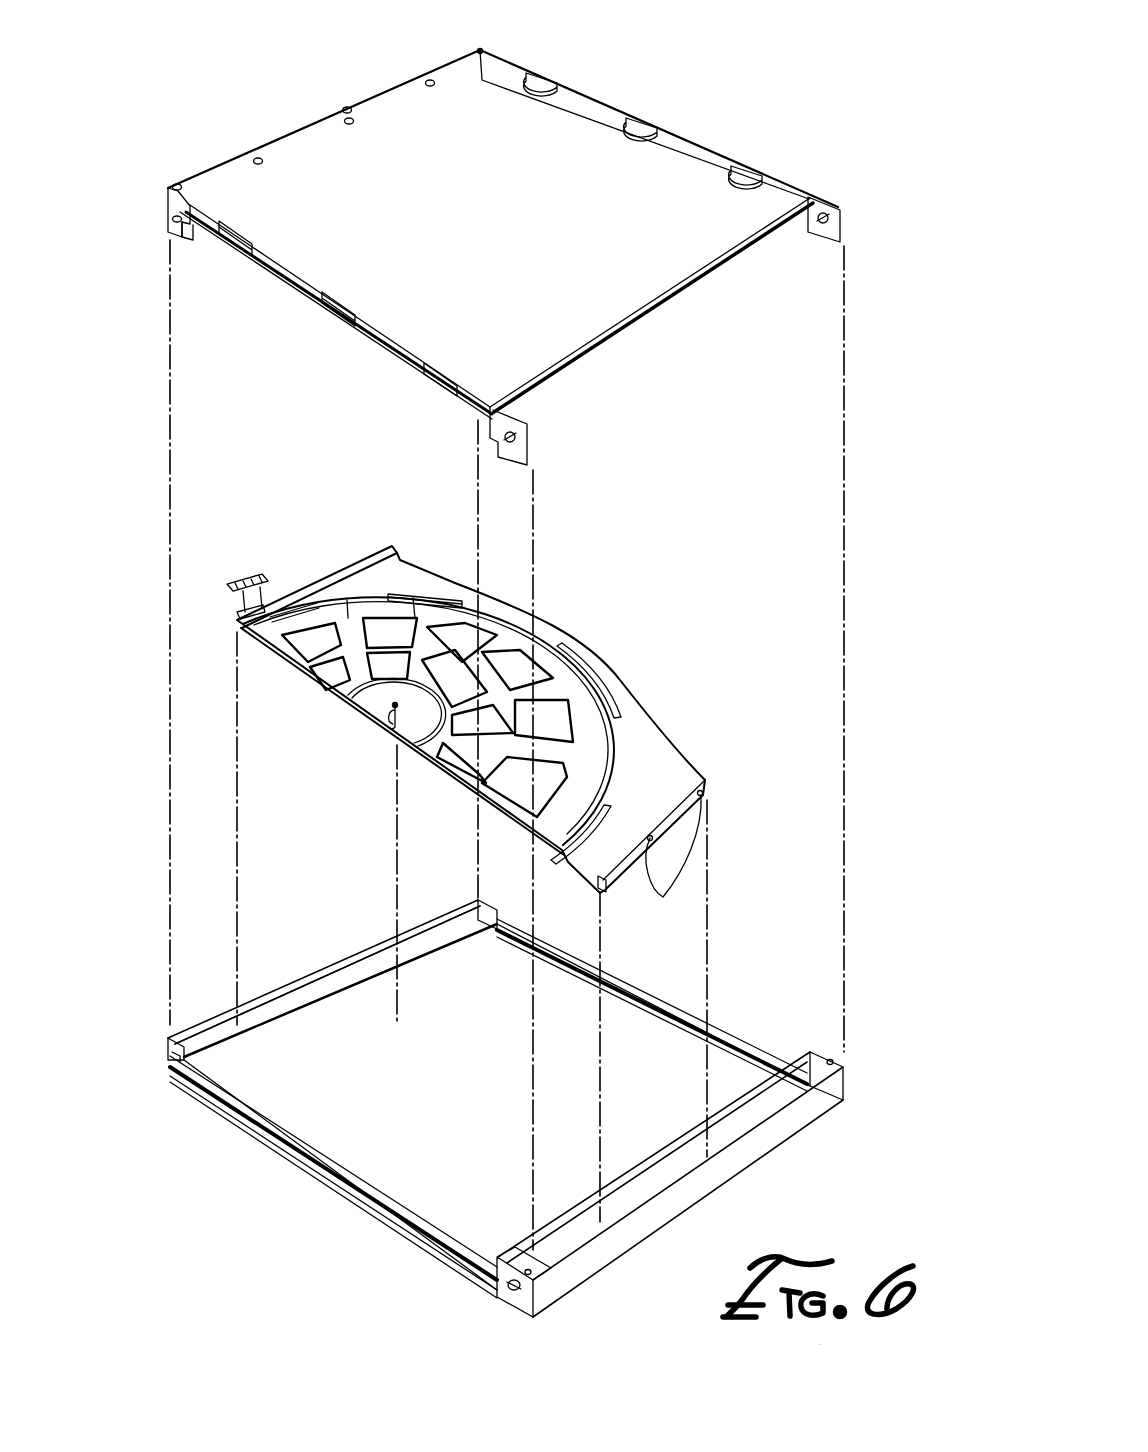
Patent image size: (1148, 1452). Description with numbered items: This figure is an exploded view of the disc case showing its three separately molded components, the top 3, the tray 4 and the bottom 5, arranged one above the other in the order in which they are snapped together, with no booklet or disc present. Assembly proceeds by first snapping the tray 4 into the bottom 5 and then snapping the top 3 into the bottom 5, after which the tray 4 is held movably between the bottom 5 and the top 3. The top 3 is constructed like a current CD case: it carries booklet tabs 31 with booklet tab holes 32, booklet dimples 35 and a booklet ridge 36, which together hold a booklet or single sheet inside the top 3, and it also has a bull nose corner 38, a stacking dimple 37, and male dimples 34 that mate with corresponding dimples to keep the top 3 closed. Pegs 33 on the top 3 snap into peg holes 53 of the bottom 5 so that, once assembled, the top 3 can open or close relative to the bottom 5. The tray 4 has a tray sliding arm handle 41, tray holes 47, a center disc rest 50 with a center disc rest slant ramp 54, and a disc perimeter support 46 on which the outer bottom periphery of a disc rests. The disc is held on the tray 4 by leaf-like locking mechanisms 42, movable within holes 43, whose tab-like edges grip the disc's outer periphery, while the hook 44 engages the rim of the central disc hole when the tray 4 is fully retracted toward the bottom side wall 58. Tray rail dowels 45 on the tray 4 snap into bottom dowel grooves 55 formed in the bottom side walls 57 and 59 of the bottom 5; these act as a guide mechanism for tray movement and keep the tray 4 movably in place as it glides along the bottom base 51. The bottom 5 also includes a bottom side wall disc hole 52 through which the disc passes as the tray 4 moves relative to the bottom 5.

The top 3 is at (368, 92).
The booklet tab 31 is at (237, 237).
The booklet tab hole 32 is at (226, 246).
The peg 33 is at (505, 440).
The male dimple 34 is at (173, 234).
The booklet dimple 35 is at (430, 82).
The booklet ridge 36 is at (645, 310).
The stacking dimple 37 is at (478, 48).
The bull nose corner 38 is at (168, 198).
The tray 4 is at (596, 650).
The tray sliding arm handle 41 is at (248, 582).
The locking mechanism 42 is at (395, 592).
The hole 43 is at (563, 845).
The hook 44 is at (368, 741).
The tray rail dowels 45 is at (602, 875).
The disc perimeter support 46 is at (548, 646).
The tray holes 47 is at (320, 635).
The center disc rest 50 is at (374, 712).
The center disc rest slant ramp 54 is at (428, 721).
The bottom 5 is at (342, 953).
The bottom base 51 is at (451, 1070).
The bottom side wall disc hole 52 is at (273, 1120).
The peg hole 53 is at (508, 1291).
The bottom dowel grooves 55 is at (366, 955).
The bottom side wall 57 is at (300, 985).
The bottom side wall 58 is at (648, 1018).
The bottom side wall 59 is at (738, 1157).